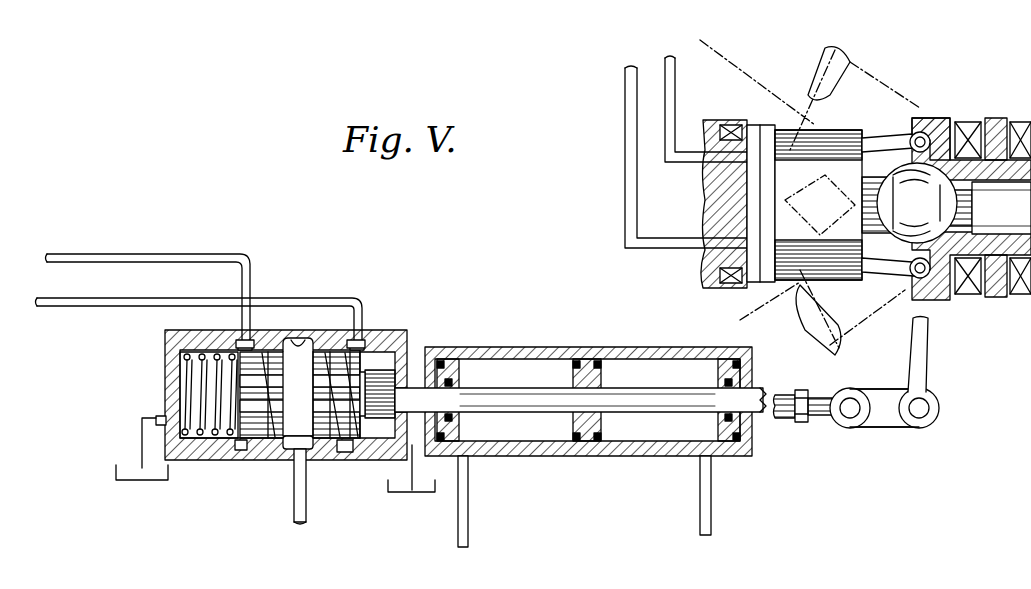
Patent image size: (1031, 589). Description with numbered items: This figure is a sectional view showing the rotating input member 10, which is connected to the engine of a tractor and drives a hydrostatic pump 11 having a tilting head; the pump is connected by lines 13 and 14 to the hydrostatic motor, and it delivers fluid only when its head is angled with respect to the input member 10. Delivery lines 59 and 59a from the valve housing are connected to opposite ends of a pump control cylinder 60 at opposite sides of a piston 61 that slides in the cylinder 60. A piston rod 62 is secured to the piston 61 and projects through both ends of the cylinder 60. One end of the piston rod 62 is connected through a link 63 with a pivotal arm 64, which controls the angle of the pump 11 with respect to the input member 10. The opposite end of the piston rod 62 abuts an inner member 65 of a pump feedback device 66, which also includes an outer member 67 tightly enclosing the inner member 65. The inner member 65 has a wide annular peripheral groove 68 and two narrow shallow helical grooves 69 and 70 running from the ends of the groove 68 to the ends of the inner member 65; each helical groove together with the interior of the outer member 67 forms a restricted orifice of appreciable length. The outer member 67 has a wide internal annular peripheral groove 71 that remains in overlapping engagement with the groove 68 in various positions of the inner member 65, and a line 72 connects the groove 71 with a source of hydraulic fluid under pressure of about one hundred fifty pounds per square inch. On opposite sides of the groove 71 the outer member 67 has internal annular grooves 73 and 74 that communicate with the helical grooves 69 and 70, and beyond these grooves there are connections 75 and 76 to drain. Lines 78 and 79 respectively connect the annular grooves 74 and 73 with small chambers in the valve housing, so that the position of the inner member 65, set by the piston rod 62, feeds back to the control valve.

The input member 10 is at (1000, 118).
The hydrostatic pump 11 is at (792, 140).
The line 13 is at (676, 162).
The line 14 is at (648, 246).
The delivery line 59 is at (468, 528).
The delivery line 59a is at (711, 531).
The pump control cylinder 60 is at (750, 458).
The piston 61 is at (575, 376).
The piston rod 62 is at (626, 446).
The link 63 is at (886, 428).
The pivotal arm 64 is at (922, 351).
The inner member 65 is at (245, 426).
The pump feedback device 66 is at (160, 347).
The outer member 67 is at (168, 382).
The annular peripheral groove 68 is at (318, 346).
The helical groove 69 is at (272, 432).
The helical groove 70 is at (386, 336).
The internal annular peripheral groove 71 is at (292, 340).
The line 72 is at (303, 522).
The internal annular peripheral groove 73 is at (243, 450).
The internal annular peripheral groove 74 is at (345, 452).
The connection to drain 75 is at (140, 443).
The connection to drain 76 is at (412, 473).
The line 78 is at (97, 306).
The line 79 is at (130, 253).